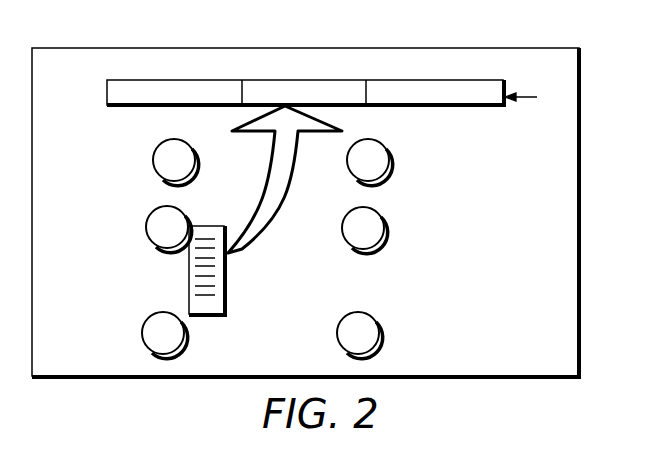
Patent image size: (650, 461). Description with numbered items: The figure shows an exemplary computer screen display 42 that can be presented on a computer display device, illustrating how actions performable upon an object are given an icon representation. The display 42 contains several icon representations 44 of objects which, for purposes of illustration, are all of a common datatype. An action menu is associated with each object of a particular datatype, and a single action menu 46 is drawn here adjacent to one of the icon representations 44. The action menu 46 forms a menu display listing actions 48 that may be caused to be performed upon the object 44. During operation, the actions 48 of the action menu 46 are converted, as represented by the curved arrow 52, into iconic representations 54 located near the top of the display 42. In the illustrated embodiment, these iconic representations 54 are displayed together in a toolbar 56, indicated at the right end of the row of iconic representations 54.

The display 42 is at (454, 31).
The icon representations 44 is at (152, 161).
The action menu 46 is at (213, 317).
The actions 48 is at (198, 295).
The arrow 52 is at (263, 181).
The iconic representations 54 is at (174, 79).
The toolbar 56 is at (538, 97).